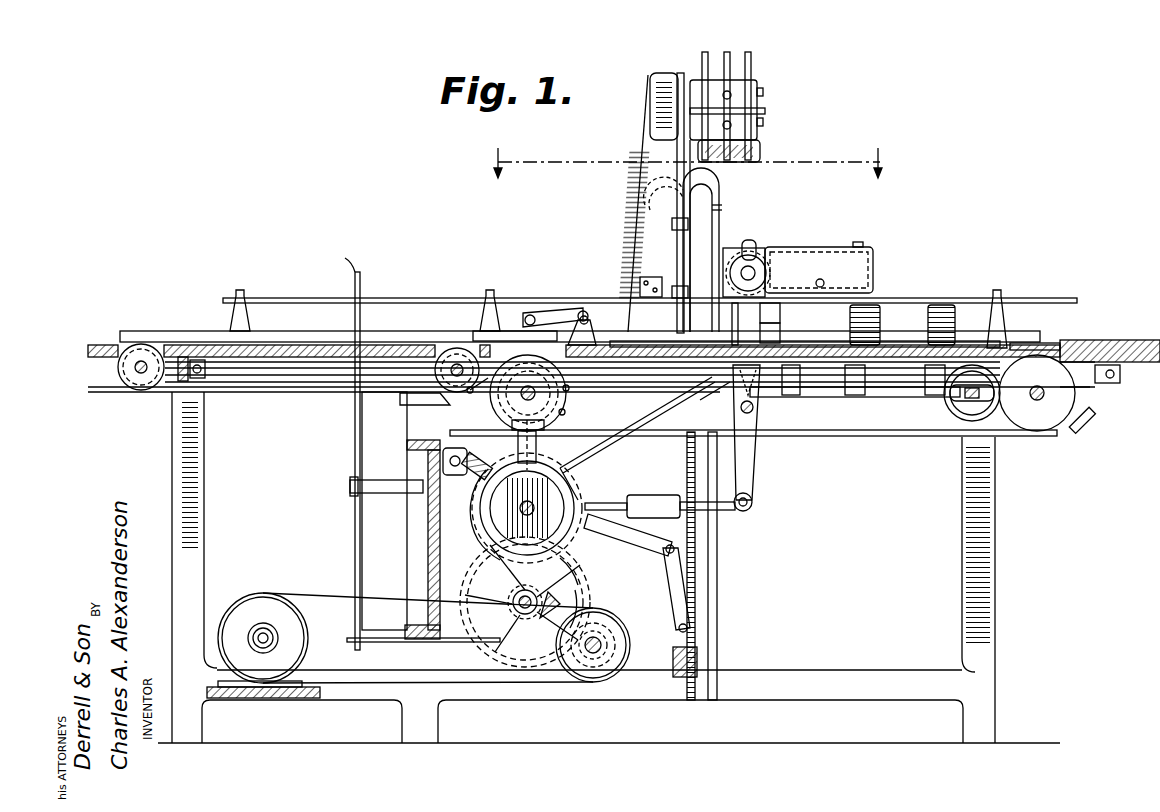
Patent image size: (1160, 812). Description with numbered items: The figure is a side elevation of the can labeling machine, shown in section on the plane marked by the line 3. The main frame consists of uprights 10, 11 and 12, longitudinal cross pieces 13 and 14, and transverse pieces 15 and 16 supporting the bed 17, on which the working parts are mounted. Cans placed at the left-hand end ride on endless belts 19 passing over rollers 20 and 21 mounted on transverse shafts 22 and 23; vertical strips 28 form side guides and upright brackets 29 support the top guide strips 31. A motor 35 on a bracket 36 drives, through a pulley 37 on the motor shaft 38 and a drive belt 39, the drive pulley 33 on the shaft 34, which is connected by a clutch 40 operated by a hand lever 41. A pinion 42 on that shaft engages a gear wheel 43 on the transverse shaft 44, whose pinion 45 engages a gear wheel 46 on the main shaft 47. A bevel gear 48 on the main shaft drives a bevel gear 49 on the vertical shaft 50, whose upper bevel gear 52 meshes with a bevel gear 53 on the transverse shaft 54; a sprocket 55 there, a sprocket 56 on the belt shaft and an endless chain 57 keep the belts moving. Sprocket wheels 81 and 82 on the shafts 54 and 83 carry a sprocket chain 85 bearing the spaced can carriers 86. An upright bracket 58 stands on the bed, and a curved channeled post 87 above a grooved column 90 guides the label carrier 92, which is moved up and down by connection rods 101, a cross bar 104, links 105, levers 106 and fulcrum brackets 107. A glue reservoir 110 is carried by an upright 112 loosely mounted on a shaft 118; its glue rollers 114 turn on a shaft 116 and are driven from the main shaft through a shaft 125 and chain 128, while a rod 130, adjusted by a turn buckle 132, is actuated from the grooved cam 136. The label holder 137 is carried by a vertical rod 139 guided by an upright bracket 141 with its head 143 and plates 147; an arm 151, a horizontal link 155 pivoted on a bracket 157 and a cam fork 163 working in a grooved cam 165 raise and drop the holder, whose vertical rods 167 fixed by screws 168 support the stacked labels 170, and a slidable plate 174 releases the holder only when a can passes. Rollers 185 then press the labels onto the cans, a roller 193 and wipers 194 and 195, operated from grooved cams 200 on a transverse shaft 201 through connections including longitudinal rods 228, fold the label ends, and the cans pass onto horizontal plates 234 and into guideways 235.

The section line 3- 3 is at (687, 163).
The upright 10 is at (175, 471).
The upright 11 is at (405, 547).
The upright 12 is at (996, 528).
The longitudinal cross piece 13 is at (835, 682).
The longitudinal cross piece 14 is at (299, 372).
The transverse piece 15 is at (176, 374).
The transverse piece 16 is at (1108, 382).
The bed 17 is at (90, 348).
The endless belt 19 is at (253, 392).
The roller 20 is at (124, 382).
The roller 21 is at (448, 352).
The transverse shaft 22 is at (135, 367).
The transverse shaft 23 is at (459, 363).
The vertical parallel strip 28 is at (162, 333).
The upright bracket 29 is at (233, 318).
The top guide strip 31 is at (426, 298).
The drive pulley 33 is at (628, 645).
The transverse shaft 34 is at (610, 614).
The motor 35 is at (257, 597).
The bracket 36 is at (270, 698).
The pulley 37 is at (270, 632).
The motor shaft 38 is at (254, 628).
The drive belt 39 is at (345, 638).
The clutch 40 is at (615, 651).
The hand lever 41 is at (357, 280).
The pinion 42 is at (588, 604).
The gear wheel 43 is at (580, 571).
The transverse shaft 44 is at (512, 600).
The pinion 45 is at (548, 601).
The gear wheel 46 is at (590, 545).
The main shaft 47 is at (519, 509).
The bevel gear 48 is at (487, 531).
The bevel gear 49 is at (480, 497).
The vertical shaft 50 is at (518, 445).
The bevel gear 52 is at (512, 426).
The bevel gear 53 is at (566, 415).
The transverse shaft 54 is at (508, 396).
The sprocket 55 is at (566, 400).
The sprocket 56 is at (410, 396).
The endless chain 57 is at (470, 393).
The upright bracket 58 is at (497, 305).
The sprocket wheel 81 is at (570, 387).
The sprocket wheel 82 is at (1031, 425).
The transverse shaft 83 is at (1040, 400).
The sprocket chain 85 is at (881, 437).
The can carrier 86 is at (1086, 424).
The post 87 is at (722, 214).
The upright column 90 is at (718, 567).
The label carrier 92 is at (738, 312).
The connection rod 101 is at (696, 584).
The cross bar 104 is at (682, 680).
The link 105 is at (672, 594).
The lever 106 is at (646, 550).
The fulcrum bracket 107 is at (457, 456).
The glue reservoir 110 is at (802, 254).
The upright 112 is at (761, 408).
The glue roller 114 is at (745, 250).
The shaft 116 is at (756, 268).
The shaft 118 is at (752, 412).
The shaft 125 is at (700, 406).
The chain 128 is at (648, 421).
The rod 130 is at (741, 512).
The turn buckle 132 is at (657, 493).
The grooved cam 136 is at (592, 452).
The label holder 137 is at (757, 90).
The vertical rod 139 is at (677, 208).
The upright bracket 141 is at (642, 238).
The head 143 is at (662, 74).
The plate 147 is at (682, 74).
The arm 151 is at (672, 224).
The horizontal link 155 is at (555, 313).
The bracket 157 is at (590, 320).
The cam fork 163 is at (492, 464).
The grooved cam 165 is at (480, 517).
The vertical rod 167 is at (752, 62).
The screw 168 is at (763, 93).
The label 170 is at (752, 150).
The plate 174 is at (676, 342).
The roller 185 is at (768, 324).
The roller 193 is at (770, 338).
The wiper 194 is at (842, 317).
The wiper 195 is at (934, 317).
The grooved cam 200 is at (960, 413).
The transverse shaft 201 is at (972, 385).
The longitudinal rod 228 is at (892, 397).
The horizontal plate 234 is at (1048, 344).
The guideway 235 is at (1108, 342).